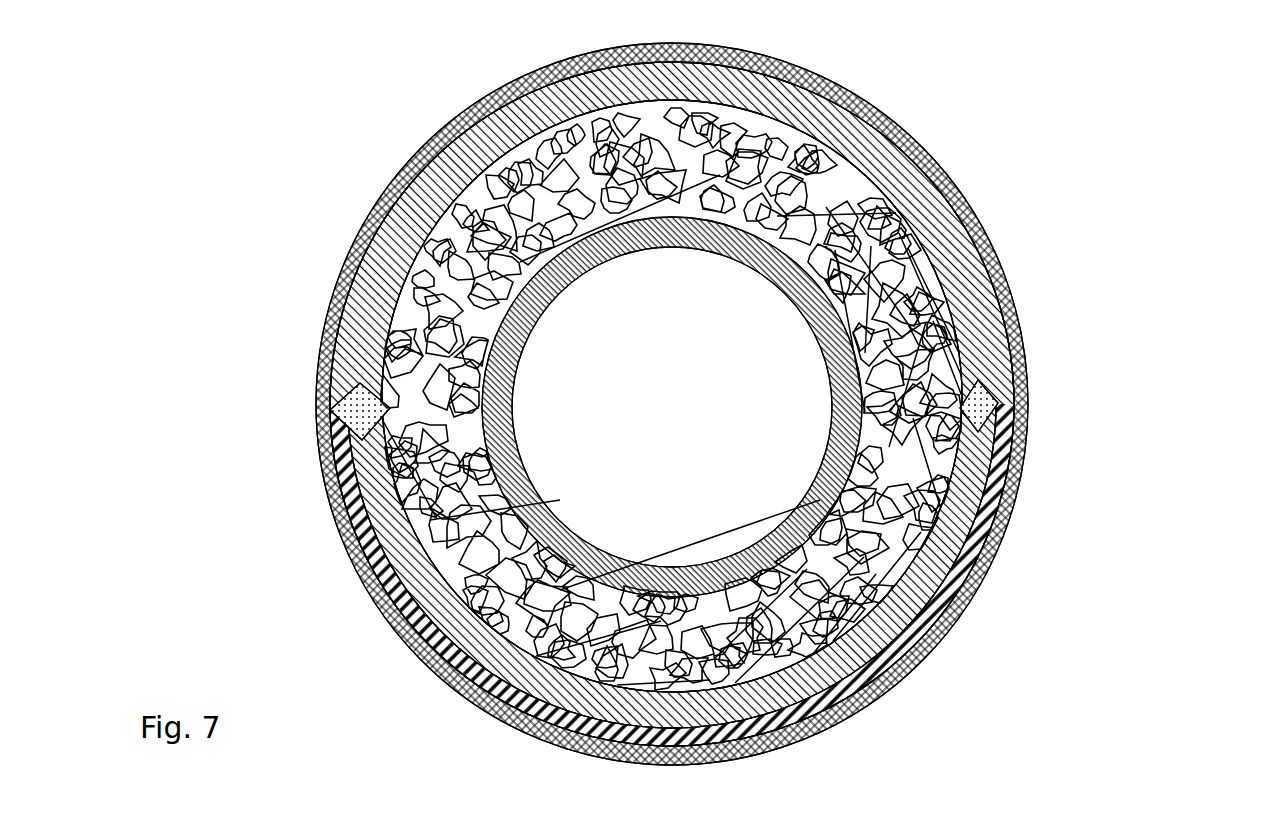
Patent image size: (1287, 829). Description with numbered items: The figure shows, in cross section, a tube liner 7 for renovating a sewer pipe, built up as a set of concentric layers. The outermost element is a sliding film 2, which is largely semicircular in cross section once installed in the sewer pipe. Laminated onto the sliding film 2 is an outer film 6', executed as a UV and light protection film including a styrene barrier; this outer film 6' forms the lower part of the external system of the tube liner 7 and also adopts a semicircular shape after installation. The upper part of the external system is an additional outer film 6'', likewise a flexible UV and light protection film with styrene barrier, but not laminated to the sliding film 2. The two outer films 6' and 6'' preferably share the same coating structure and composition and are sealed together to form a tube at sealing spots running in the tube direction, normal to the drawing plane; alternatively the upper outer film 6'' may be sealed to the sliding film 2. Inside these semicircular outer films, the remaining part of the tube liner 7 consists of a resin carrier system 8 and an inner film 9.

The sliding film 2 is at (412, 620).
The outer film 6' is at (713, 404).
The additional outer film 6'' is at (672, 378).
The tube liner 7 is at (994, 300).
The resin carrier system 8 is at (487, 262).
The inner film 9 is at (508, 462).
The cable K is at (958, 192).